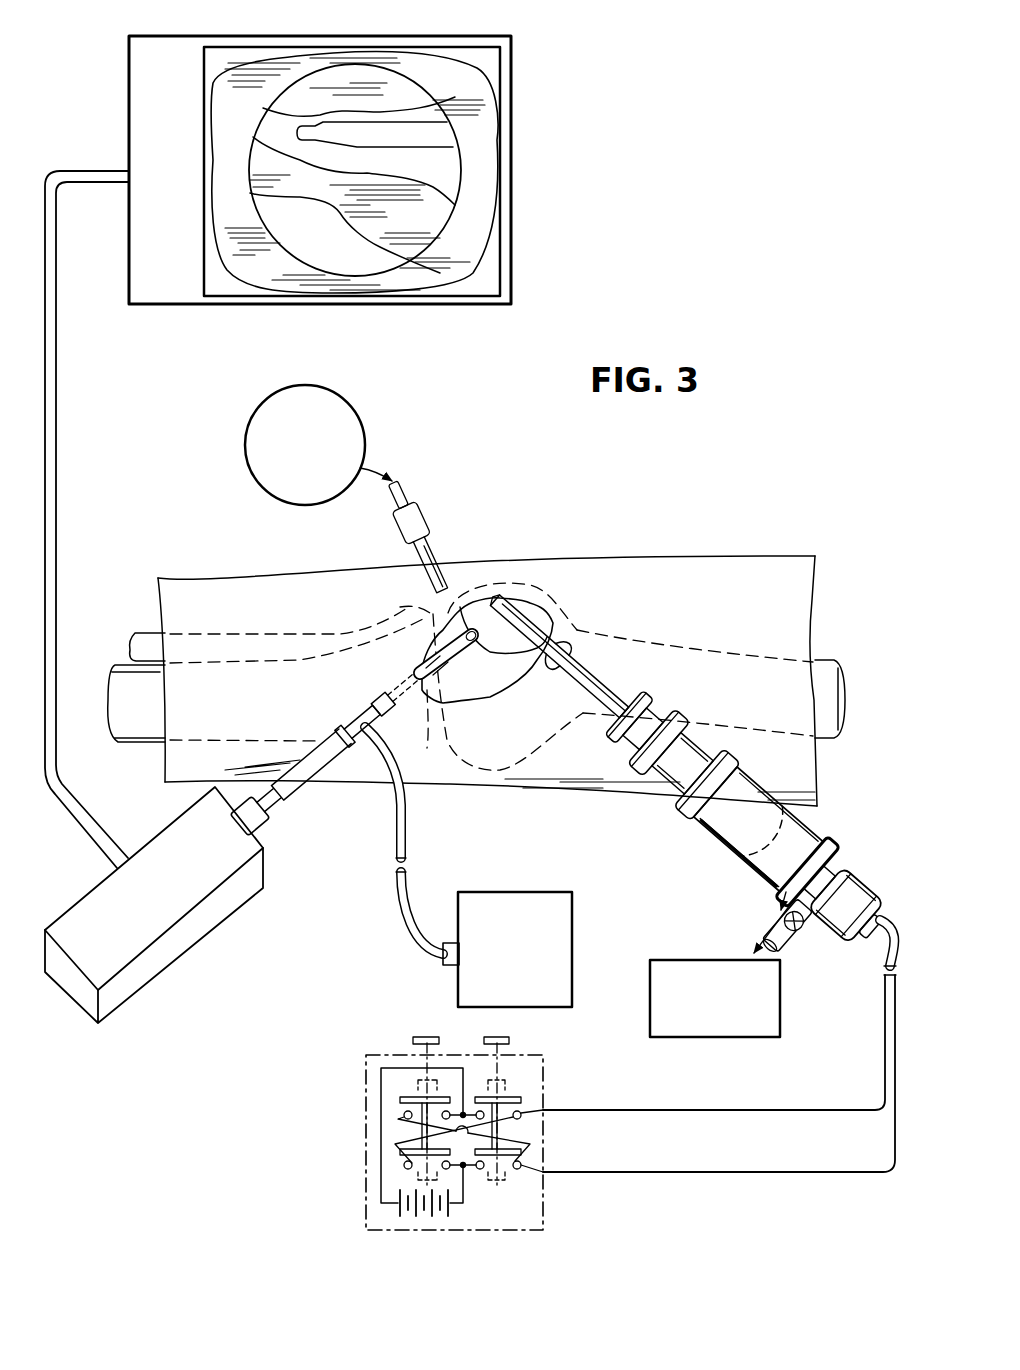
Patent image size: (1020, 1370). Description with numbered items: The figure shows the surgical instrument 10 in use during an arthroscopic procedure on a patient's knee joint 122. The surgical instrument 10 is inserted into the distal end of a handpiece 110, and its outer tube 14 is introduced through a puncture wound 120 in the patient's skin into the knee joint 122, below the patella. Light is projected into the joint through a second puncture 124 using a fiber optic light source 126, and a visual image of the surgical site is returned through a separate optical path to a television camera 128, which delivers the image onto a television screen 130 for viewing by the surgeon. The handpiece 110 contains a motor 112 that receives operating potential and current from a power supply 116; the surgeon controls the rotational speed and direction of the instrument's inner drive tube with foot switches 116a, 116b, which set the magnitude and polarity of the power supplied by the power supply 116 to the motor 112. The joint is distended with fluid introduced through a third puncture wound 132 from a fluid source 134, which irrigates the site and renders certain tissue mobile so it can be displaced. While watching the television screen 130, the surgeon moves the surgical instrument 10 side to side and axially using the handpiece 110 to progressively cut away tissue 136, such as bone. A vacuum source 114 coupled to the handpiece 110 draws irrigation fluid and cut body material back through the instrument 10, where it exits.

The surgical instrument 10 is at (693, 792).
The outer tube 14 is at (600, 683).
The handpiece 110 is at (715, 835).
The motor 112 is at (767, 848).
The vacuum source 114 is at (688, 960).
The power supply 116 is at (445, 1115).
The foot switch 116a is at (420, 1038).
The foot switch 116b is at (510, 1040).
The puncture wound 120 is at (572, 648).
The knee joint 122 is at (392, 598).
The second puncture 124 is at (377, 703).
The fiber optic light source 126 is at (520, 892).
The television camera 128 is at (197, 930).
The television screen 130 is at (516, 98).
The third puncture wound 132 is at (450, 588).
The fluid source 134 is at (352, 408).
The tissue 136 is at (267, 152).